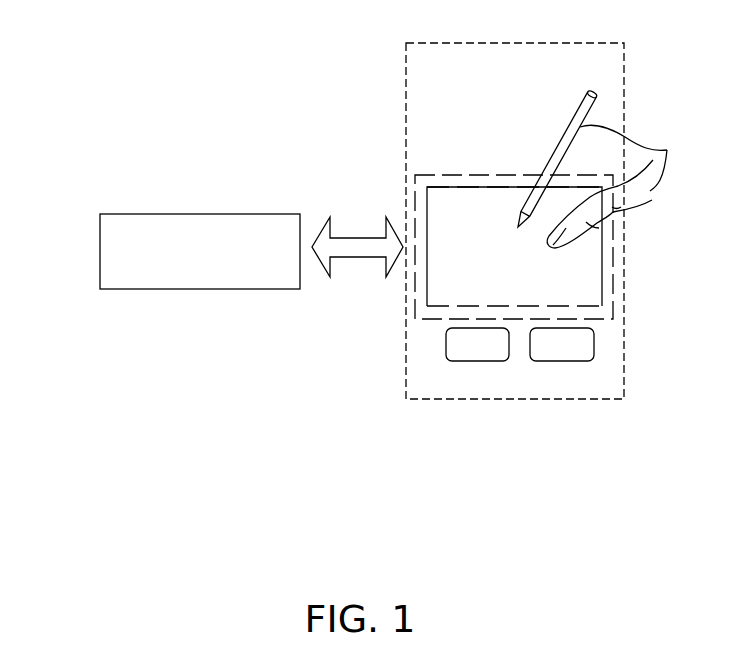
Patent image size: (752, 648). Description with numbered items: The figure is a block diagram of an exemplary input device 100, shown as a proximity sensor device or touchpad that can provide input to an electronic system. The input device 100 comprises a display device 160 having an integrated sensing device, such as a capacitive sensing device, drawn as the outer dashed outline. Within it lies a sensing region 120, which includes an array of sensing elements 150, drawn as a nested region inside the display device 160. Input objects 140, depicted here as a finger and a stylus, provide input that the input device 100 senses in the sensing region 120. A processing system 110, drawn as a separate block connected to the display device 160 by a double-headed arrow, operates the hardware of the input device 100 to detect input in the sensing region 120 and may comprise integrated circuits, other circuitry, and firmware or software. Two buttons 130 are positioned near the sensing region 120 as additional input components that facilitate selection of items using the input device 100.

The input device 100 is at (347, 68).
The processing system 110 is at (100, 247).
The sensing region 120 is at (613, 260).
The buttons 130 is at (482, 361).
The input objects 140 is at (667, 150).
The array of sensing elements 150 is at (467, 187).
The display device 160 is at (625, 70).